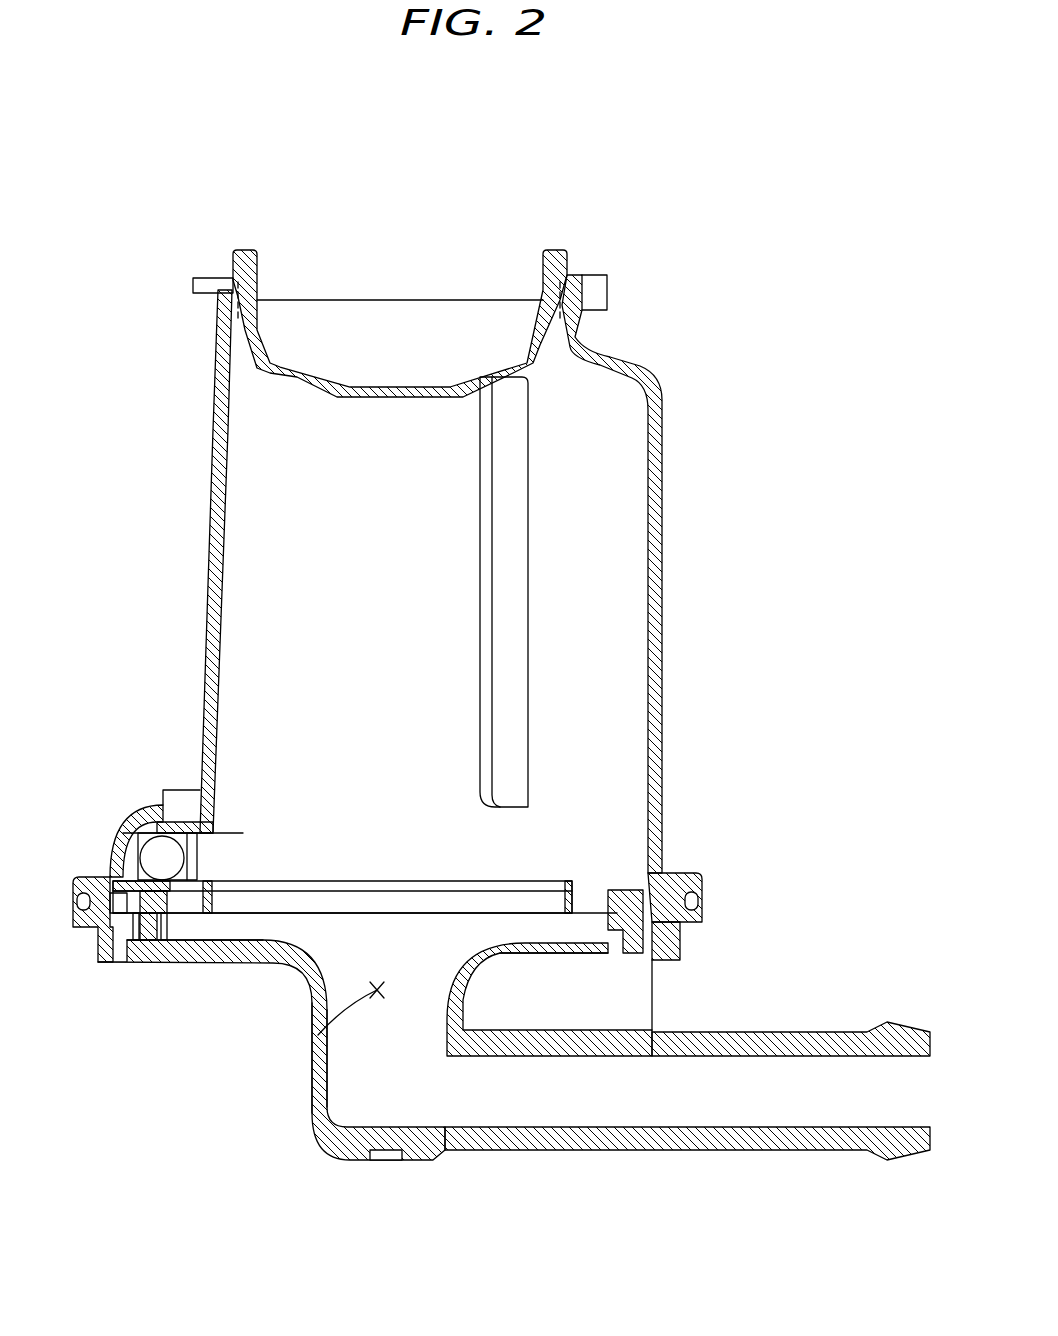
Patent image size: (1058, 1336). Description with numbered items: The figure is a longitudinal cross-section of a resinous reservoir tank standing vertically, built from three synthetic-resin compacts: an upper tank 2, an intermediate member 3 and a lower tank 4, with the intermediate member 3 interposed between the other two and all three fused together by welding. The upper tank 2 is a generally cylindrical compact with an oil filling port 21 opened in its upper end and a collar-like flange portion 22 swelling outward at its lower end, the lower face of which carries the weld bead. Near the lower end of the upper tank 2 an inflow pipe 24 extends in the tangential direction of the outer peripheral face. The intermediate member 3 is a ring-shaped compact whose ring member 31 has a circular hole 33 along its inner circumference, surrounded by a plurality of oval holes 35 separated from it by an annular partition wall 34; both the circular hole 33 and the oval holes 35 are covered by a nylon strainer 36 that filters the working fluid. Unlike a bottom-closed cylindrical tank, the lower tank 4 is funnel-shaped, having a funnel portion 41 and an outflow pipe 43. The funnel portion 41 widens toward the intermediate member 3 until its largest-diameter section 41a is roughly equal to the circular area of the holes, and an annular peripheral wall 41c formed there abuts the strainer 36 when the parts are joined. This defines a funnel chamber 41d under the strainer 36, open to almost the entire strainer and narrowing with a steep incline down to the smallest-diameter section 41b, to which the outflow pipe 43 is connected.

The upper tank 2 is at (195, 515).
The oil filling port 21 is at (355, 318).
The flange portion 22 is at (698, 877).
The inflow pipe 24 is at (150, 880).
The intermediate member 3 is at (85, 945).
The ring member 31 is at (690, 923).
The circular hole 33 is at (565, 885).
The annular partition wall 34 is at (203, 898).
The oval holes 35 is at (190, 895).
The strainer 36 is at (365, 913).
The lower tank 4 is at (257, 1000).
The funnel portion 41 is at (477, 983).
The largest-diameter section 41a is at (178, 948).
The smallest-diameter section 41b is at (318, 1052).
The annular peripheral wall 41c is at (605, 932).
The funnel chamber 41d is at (320, 1028).
The outflow pipe 43 is at (770, 1140).